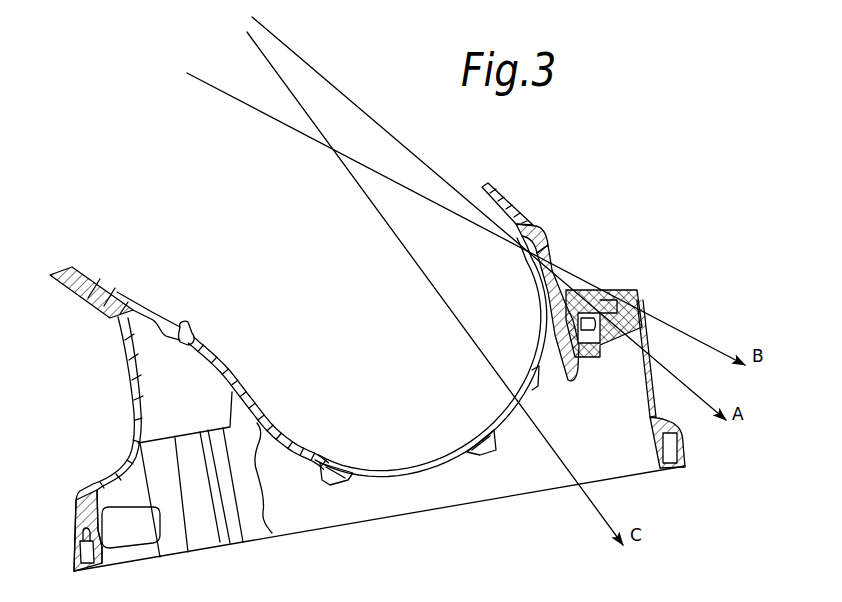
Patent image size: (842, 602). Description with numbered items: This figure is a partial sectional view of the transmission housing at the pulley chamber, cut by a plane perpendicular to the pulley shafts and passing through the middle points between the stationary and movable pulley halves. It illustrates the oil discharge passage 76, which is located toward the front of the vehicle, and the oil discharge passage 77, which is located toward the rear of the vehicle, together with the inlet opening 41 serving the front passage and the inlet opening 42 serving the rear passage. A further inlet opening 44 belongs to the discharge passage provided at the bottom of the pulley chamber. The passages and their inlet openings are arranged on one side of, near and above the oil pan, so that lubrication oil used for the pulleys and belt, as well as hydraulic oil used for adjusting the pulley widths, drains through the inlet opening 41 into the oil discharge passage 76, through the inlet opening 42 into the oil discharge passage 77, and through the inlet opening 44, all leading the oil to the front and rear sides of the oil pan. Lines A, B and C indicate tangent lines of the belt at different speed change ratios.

The inlet opening 41 is at (532, 253).
The inlet opening 42 is at (163, 302).
The inlet opening 44 is at (413, 453).
The oil discharge passage 76 is at (550, 310).
The oil discharge passage 77 is at (153, 415).